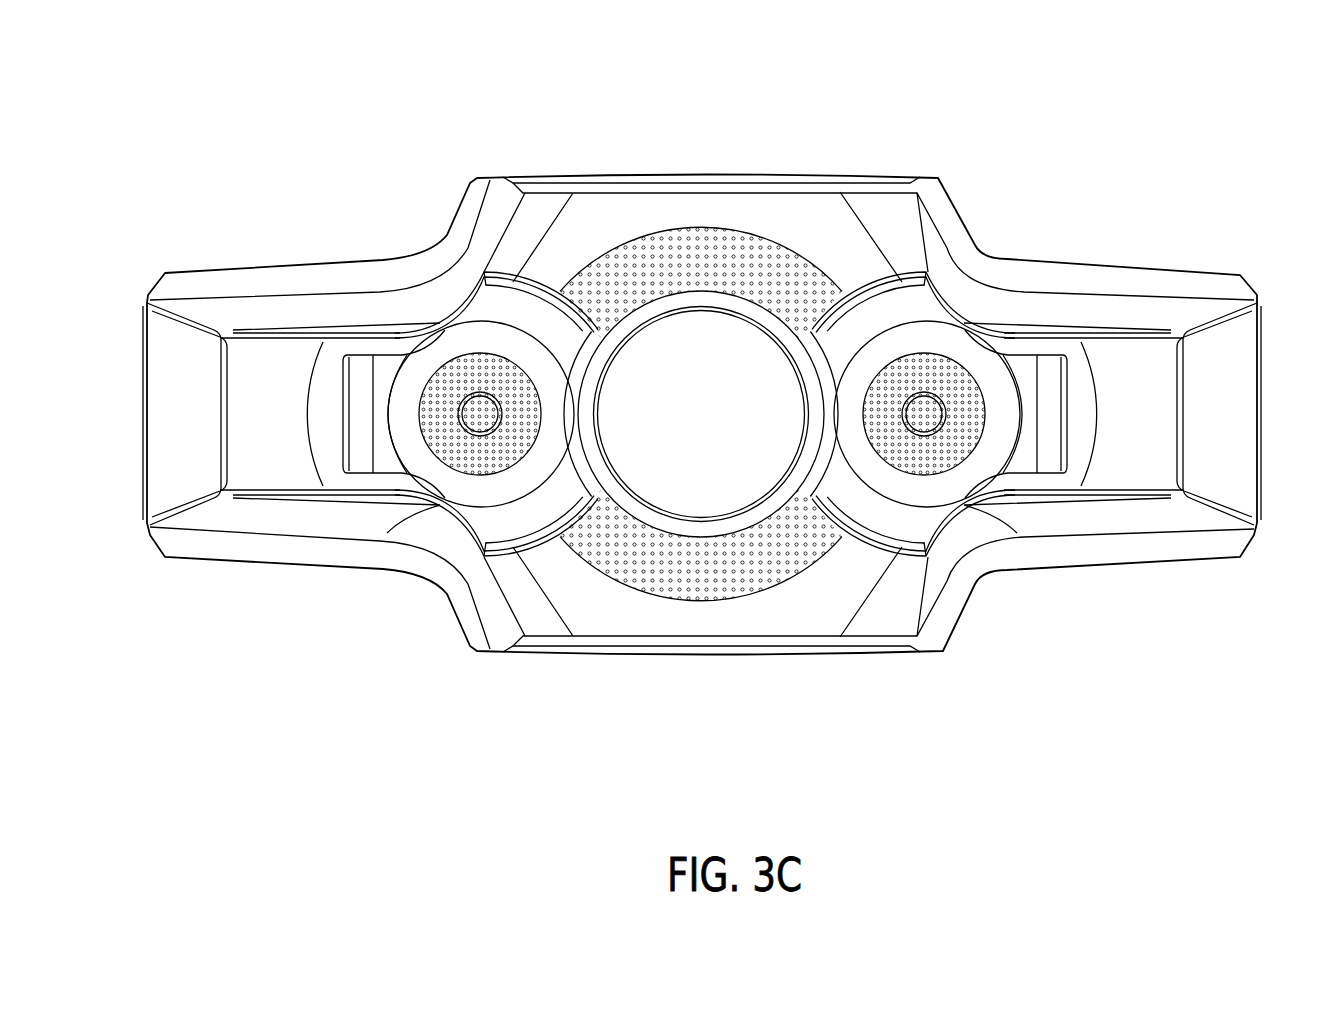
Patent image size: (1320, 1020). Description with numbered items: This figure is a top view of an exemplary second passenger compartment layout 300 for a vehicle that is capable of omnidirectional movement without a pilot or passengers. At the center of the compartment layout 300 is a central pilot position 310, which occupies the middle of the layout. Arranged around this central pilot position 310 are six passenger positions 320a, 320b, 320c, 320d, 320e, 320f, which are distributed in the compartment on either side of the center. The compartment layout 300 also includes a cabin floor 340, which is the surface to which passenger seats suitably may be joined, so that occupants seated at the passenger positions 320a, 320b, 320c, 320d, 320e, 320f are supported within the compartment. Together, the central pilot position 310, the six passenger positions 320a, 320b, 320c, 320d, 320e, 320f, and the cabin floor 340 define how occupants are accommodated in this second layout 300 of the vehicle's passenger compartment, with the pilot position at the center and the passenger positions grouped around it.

The second passenger compartment layout 300 is at (272, 126).
The central pilot position 310 is at (683, 310).
The passenger position 320a is at (362, 461).
The passenger position 320b is at (1010, 460).
The passenger position 320c is at (501, 514).
The passenger position 320d is at (859, 516).
The passenger position 320e is at (500, 305).
The passenger position 320f is at (876, 307).
The cabin floor 340 is at (713, 615).